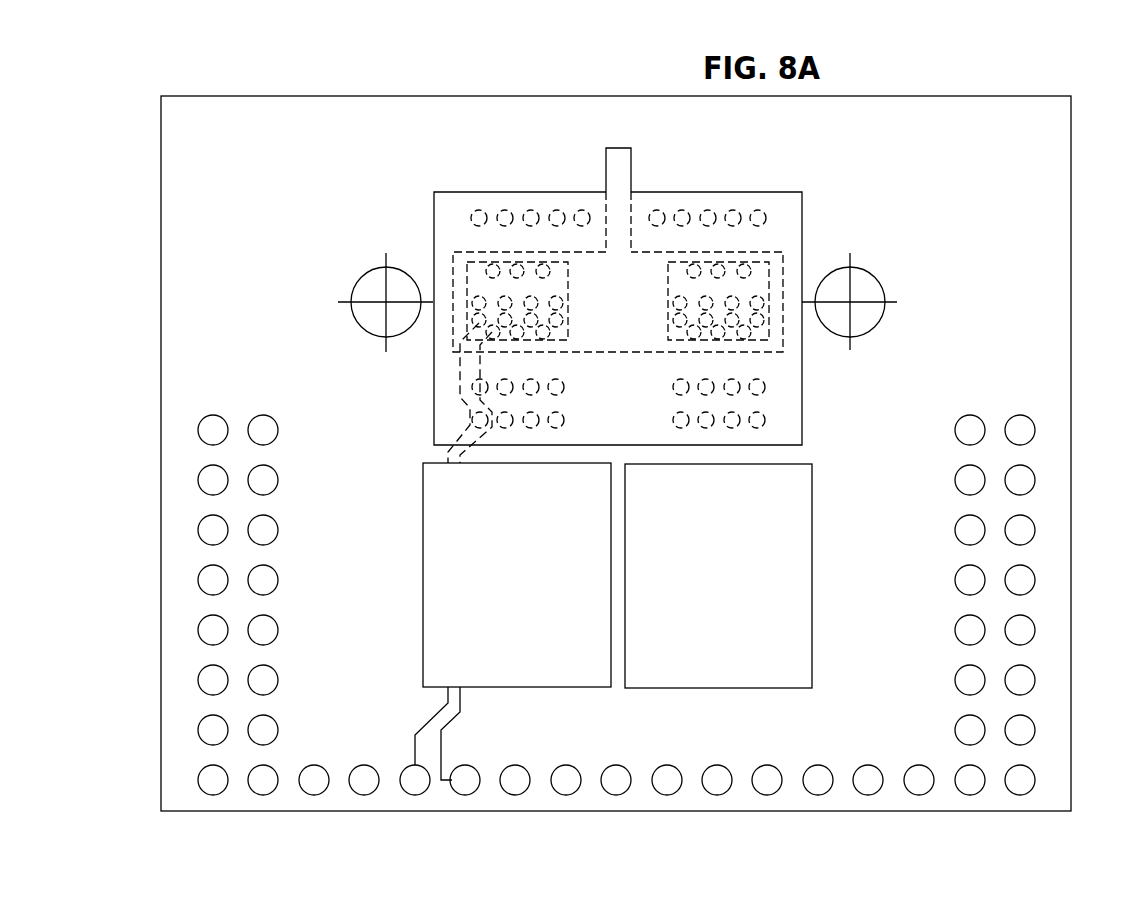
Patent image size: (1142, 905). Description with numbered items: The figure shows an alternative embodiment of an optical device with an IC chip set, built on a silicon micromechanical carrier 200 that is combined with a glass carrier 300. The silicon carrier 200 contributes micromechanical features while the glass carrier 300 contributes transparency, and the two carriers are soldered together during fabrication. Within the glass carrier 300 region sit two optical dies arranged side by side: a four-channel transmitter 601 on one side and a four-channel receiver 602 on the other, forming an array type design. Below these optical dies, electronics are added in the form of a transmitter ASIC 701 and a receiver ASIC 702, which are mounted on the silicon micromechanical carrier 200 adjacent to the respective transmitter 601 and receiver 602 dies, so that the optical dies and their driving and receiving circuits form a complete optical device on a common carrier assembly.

The silicon micromechanical carrier 200 is at (192, 119).
The glass carrier 300 is at (784, 213).
The 4-channel transmitter 601 is at (474, 268).
The 4-channel receiver 602 is at (759, 270).
The transmitter ASIC 701 is at (517, 603).
The receiver ASIC 702 is at (718, 602).